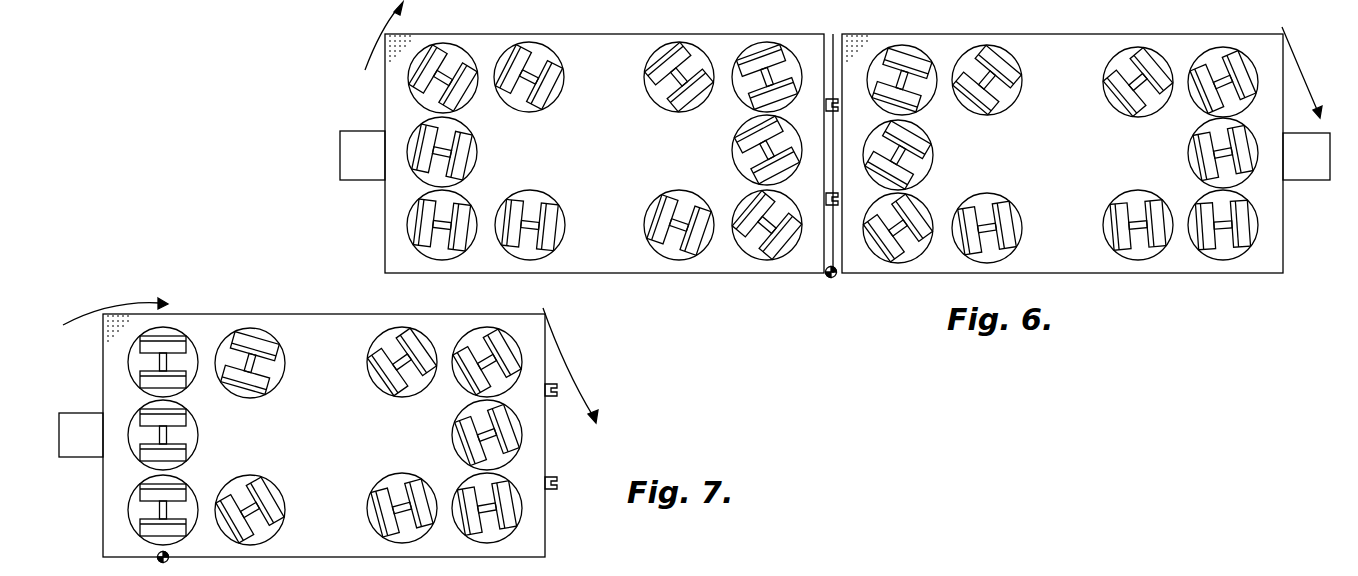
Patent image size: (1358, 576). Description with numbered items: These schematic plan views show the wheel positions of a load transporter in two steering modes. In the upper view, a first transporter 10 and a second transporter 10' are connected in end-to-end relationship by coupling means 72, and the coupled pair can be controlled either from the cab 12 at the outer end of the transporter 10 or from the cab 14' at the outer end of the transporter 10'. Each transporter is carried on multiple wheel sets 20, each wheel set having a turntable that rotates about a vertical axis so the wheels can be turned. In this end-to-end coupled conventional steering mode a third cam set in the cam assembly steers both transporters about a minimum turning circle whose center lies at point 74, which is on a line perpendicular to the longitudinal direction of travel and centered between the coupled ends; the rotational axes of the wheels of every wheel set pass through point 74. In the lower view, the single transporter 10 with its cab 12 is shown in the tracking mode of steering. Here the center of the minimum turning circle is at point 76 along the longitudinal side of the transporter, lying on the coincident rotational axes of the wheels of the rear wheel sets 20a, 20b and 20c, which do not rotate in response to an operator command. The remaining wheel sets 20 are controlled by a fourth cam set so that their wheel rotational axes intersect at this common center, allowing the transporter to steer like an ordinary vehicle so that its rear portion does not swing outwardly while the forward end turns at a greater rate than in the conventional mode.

In FIG. 6, the transporter 10 is at (594, 136).
In FIG. 7, the transporter 10 is at (330, 413).
In FIG. 6, the second transporter 10' is at (1082, 137).
In FIG. 6, the operator's cab 12 is at (366, 176).
In FIG. 7, the operator's cab 12 is at (59, 415).
In FIG. 6, the cab of second transporter 14' is at (1306, 173).
In FIG. 6, the wheel sets 20 is at (507, 51).
In FIG. 7, the wheel sets 20 is at (462, 334).
In FIG. 7, the rear wheel set 20a is at (130, 514).
In FIG. 7, the rear wheel set 20b is at (134, 452).
In FIG. 7, the rear wheel set 20c is at (130, 370).
In FIG. 6, the coupling means 72 is at (825, 105).
In FIG. 6, the center point of turning circle 74 is at (829, 279).
In FIG. 7, the turning circle center point 76 is at (158, 556).